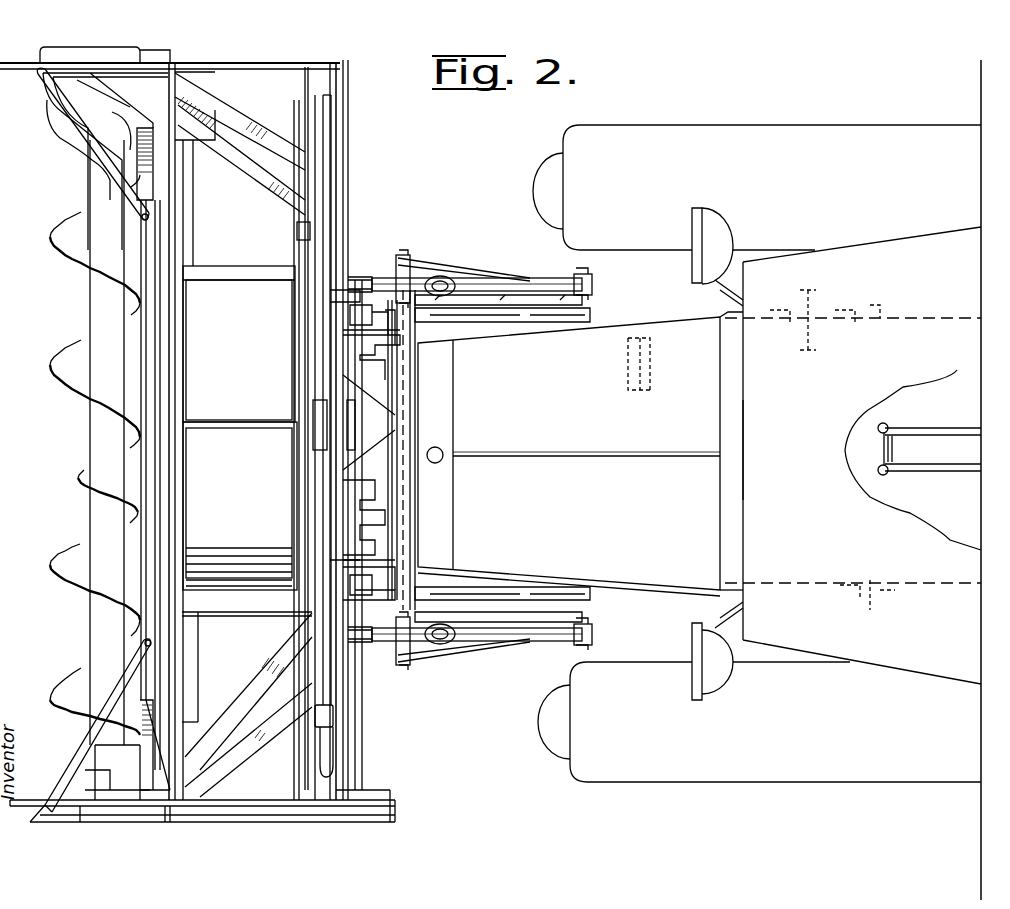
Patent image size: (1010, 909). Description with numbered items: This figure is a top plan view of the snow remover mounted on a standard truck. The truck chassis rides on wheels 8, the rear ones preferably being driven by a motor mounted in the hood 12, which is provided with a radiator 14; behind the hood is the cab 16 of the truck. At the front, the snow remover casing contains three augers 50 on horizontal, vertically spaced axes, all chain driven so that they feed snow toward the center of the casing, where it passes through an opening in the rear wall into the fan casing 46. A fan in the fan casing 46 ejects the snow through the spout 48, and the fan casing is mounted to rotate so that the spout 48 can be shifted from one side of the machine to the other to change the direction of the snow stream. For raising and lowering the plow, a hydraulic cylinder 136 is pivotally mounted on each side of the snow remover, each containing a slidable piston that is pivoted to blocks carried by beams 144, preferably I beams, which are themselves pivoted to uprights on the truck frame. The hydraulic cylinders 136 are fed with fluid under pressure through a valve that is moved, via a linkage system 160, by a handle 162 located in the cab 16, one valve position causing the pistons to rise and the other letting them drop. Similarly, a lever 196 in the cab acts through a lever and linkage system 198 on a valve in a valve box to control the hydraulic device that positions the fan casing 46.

The wheels 8 is at (545, 173).
The hood 12 is at (618, 345).
The radiator 14 is at (440, 401).
The cab 16 is at (750, 480).
The fan casing 46 is at (234, 575).
The spout 48 is at (241, 295).
The augers 50 is at (104, 318).
The hydraulic cylinders 136 is at (447, 273).
The beams 144 is at (526, 285).
The linkage system 160 is at (970, 480).
The handle 162 is at (885, 476).
The lever 196 is at (890, 424).
The lever and linkage system 198 is at (932, 425).